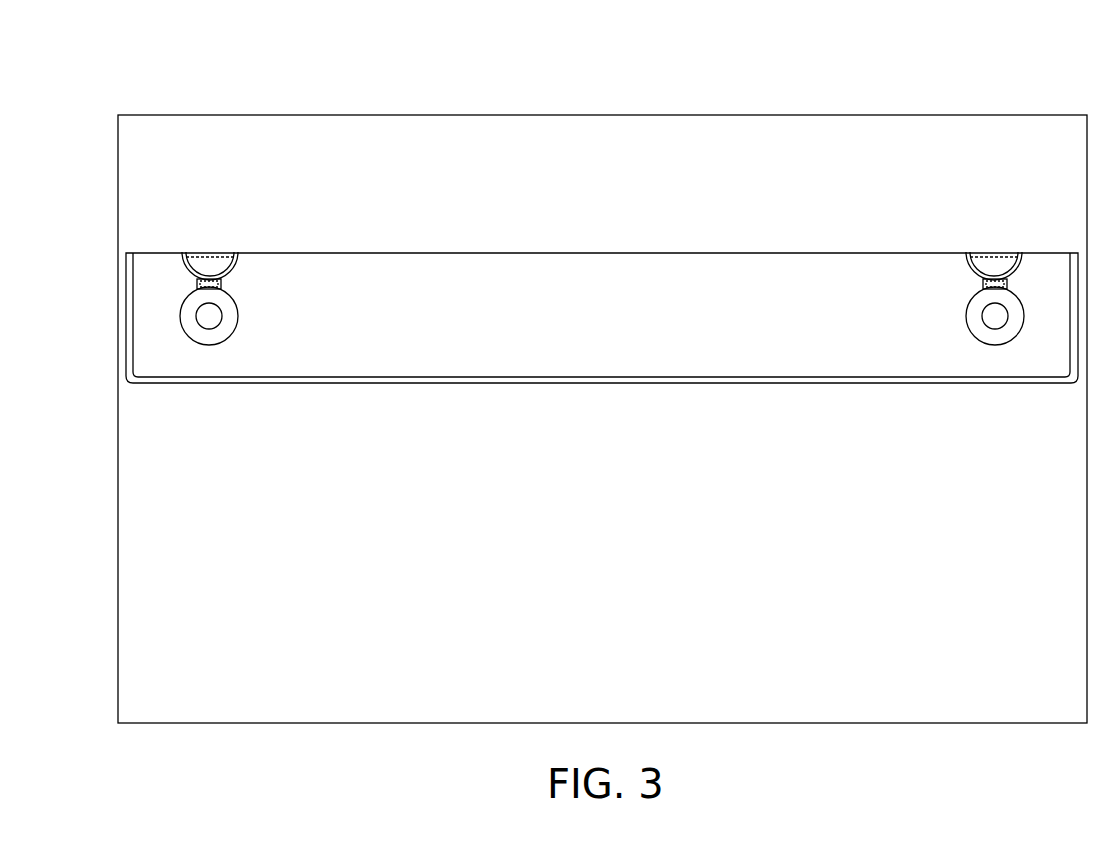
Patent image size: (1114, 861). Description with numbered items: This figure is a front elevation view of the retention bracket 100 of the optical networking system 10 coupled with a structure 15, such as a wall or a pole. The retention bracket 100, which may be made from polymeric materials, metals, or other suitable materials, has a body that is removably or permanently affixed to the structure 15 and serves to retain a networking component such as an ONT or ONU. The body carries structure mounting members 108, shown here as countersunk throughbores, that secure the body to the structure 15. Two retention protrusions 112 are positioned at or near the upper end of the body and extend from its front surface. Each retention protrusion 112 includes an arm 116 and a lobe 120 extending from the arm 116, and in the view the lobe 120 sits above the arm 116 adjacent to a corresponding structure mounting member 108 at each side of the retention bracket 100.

The optical networking system 10 is at (637, 104).
The structure 15 is at (719, 115).
The retention bracket 100 is at (602, 253).
The retention protrusion 112 is at (602, 282).
The lobe 120 is at (230, 259).
The arm 116 is at (222, 288).
The structure mounting member 108 is at (233, 333).